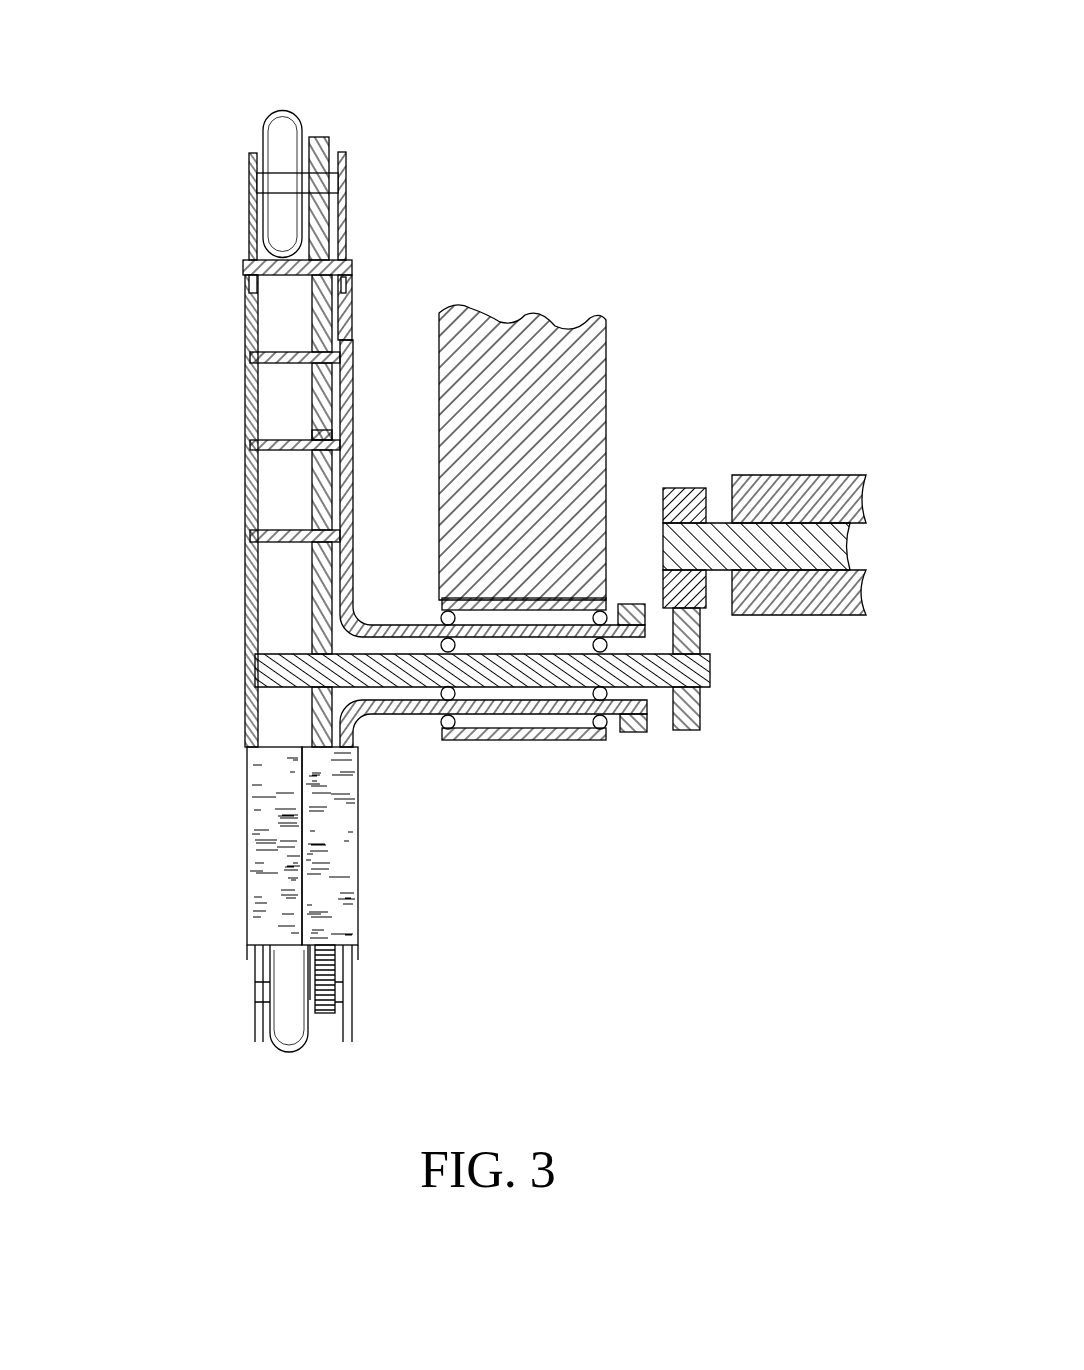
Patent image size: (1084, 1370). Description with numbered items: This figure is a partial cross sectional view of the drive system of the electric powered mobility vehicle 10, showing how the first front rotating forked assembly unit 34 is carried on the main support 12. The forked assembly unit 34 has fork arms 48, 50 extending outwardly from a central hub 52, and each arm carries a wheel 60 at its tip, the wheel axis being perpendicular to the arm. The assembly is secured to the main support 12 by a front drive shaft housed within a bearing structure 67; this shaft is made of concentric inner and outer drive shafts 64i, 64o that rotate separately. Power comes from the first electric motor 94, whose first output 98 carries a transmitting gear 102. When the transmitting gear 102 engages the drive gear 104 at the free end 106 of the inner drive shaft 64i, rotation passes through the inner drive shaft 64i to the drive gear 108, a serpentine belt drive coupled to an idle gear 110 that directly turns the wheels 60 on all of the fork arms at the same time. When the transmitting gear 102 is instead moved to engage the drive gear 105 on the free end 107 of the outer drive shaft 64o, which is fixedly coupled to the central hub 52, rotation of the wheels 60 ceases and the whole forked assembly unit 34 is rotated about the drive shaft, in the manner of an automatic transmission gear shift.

The mobility vehicle 10 is at (638, 158).
The main support 12 is at (607, 333).
The first front rotating forked assembly unit 34 is at (236, 482).
The fork arm 48 is at (247, 831).
The fork arm 50 is at (345, 318).
The central hub 52 is at (357, 610).
The wheel 60 is at (289, 128).
The inner drive shaft 64i is at (392, 672).
The outer drive shaft 64o is at (428, 716).
The bearing structure 67 is at (547, 740).
The first electric motor 94 is at (805, 472).
The first output 98 is at (717, 522).
The transmitting gear 102 is at (692, 488).
The drive gear 104 is at (690, 735).
The drive gear 105 is at (641, 735).
The free end 106 is at (712, 668).
The free end 107 is at (618, 604).
The drive gear 108 is at (318, 614).
The idle gear 110 is at (312, 402).